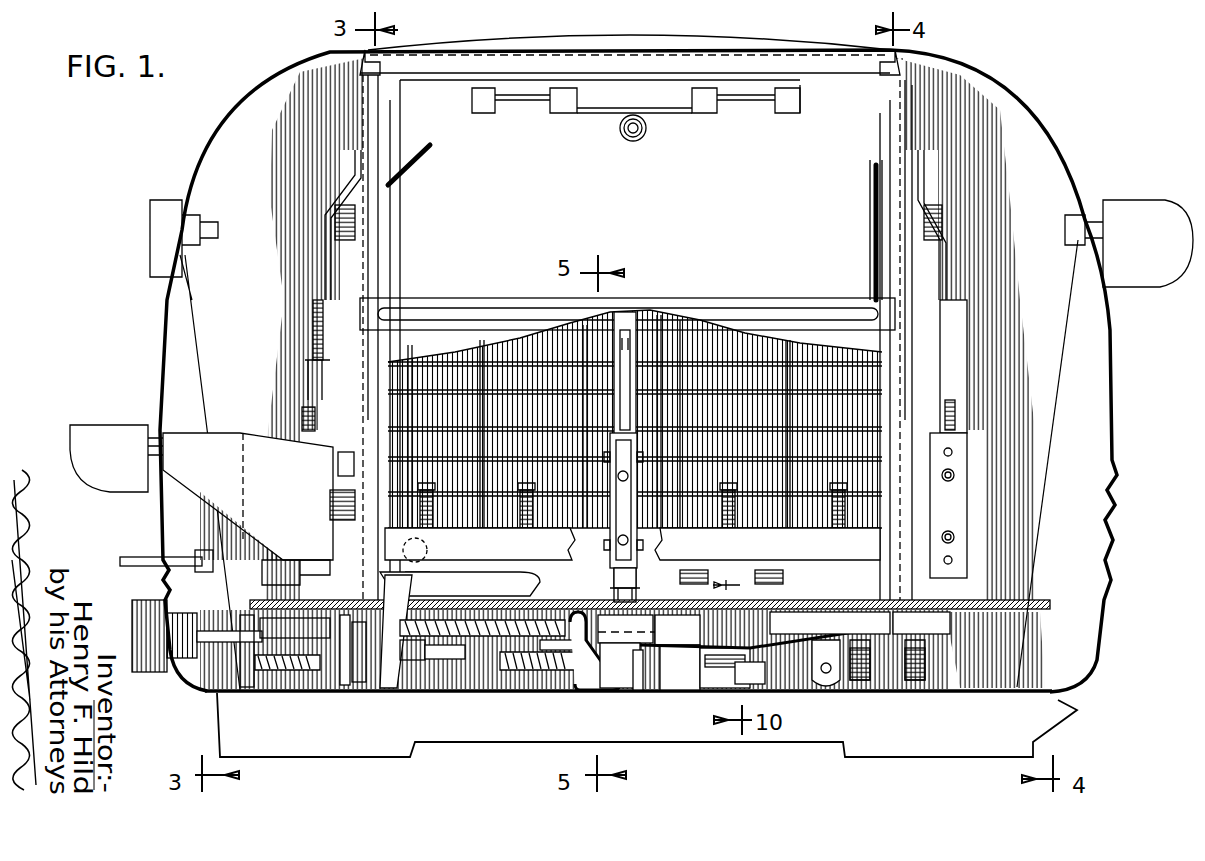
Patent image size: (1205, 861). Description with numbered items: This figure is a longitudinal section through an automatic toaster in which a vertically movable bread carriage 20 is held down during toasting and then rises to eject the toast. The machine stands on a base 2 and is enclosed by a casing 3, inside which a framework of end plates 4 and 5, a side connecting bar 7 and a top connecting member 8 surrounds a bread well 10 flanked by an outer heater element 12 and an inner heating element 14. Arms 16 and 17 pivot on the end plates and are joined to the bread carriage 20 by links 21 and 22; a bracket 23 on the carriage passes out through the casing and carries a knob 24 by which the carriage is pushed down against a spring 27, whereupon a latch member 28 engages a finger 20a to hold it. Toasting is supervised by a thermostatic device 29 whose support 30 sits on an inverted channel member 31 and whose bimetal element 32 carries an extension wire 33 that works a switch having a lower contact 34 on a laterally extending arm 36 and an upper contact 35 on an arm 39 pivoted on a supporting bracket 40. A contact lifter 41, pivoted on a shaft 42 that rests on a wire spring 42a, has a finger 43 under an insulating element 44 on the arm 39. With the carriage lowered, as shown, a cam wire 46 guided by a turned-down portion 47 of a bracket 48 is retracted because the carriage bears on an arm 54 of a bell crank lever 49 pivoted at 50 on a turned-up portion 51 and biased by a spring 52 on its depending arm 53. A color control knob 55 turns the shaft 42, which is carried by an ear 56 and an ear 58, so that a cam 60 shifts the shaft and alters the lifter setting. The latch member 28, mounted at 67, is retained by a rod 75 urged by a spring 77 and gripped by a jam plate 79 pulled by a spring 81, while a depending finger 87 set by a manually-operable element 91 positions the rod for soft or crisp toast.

The base 2 is at (1068, 718).
The casing 3 is at (1060, 137).
The end plate 4 is at (366, 135).
The end plate 5 is at (905, 135).
The side connecting bar 7 is at (740, 298).
The top connecting member 8 is at (447, 82).
The bread well 10 is at (752, 568).
The outer heater element 12 is at (405, 240).
The inner heating element 14 is at (810, 395).
The arm 16 is at (320, 253).
The arm 17 is at (940, 258).
The bread carriage 20 is at (848, 556).
The finger 20a is at (340, 500).
The link 21 is at (318, 352).
The link 22 is at (950, 357).
The bracket 23 is at (228, 440).
The knob 24 is at (94, 430).
The spring 27 is at (272, 560).
The latch member 28 is at (340, 465).
The thermostatic device 29 is at (633, 475).
The support 30 is at (660, 300).
The inverted channel member 31 is at (843, 605).
The bimetal element 32 is at (620, 372).
The extension wire 33 is at (622, 524).
The lower contact 34 is at (716, 690).
The upper contact 35 is at (750, 672).
The laterally extending arm 36 is at (680, 696).
The arm 39 is at (798, 623).
The supporting bracket 40 is at (832, 680).
The contact lifter 41 is at (622, 635).
The shaft 42 is at (218, 640).
The wire spring 42a is at (467, 697).
The finger 43 is at (633, 700).
The insulating element 44 is at (613, 692).
The cam wire 46 is at (578, 695).
The turned-down portion 47 is at (553, 690).
The bracket 48 is at (548, 566).
The bell crank lever 49 is at (420, 592).
The pivot 50 is at (432, 548).
The turned-up portion 51 is at (440, 574).
The spring 52 is at (397, 695).
The depending arm 53 is at (365, 680).
The arm 54 is at (495, 590).
The color control knob 55 is at (151, 662).
The ear 56 is at (246, 692).
The ear 58 is at (668, 692).
The cam 60 is at (745, 647).
The mounting point 67 is at (352, 695).
The rod 75 is at (410, 691).
The spring 77 is at (518, 692).
The jam plate 79 is at (444, 693).
The spring 81 is at (303, 692).
The depending finger 87 is at (298, 680).
The manually-operable element 91 is at (135, 558).